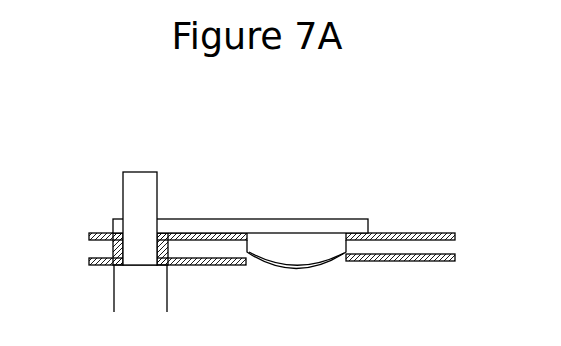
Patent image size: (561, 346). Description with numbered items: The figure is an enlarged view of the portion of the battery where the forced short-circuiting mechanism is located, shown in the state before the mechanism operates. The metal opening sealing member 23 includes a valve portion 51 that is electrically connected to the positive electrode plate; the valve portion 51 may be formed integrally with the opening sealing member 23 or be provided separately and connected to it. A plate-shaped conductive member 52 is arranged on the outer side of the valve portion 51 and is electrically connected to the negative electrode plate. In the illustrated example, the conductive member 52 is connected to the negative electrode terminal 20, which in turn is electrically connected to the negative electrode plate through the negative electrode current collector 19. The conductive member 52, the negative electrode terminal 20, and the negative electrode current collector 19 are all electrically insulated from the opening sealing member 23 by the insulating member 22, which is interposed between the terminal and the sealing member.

The negative electrode current collector 19 is at (130, 283).
The negative electrode terminal 20 is at (138, 198).
The insulating member 22 is at (107, 233).
The opening sealing member 23 is at (442, 248).
The valve portion 51 is at (318, 263).
The conductive member 52 is at (267, 228).